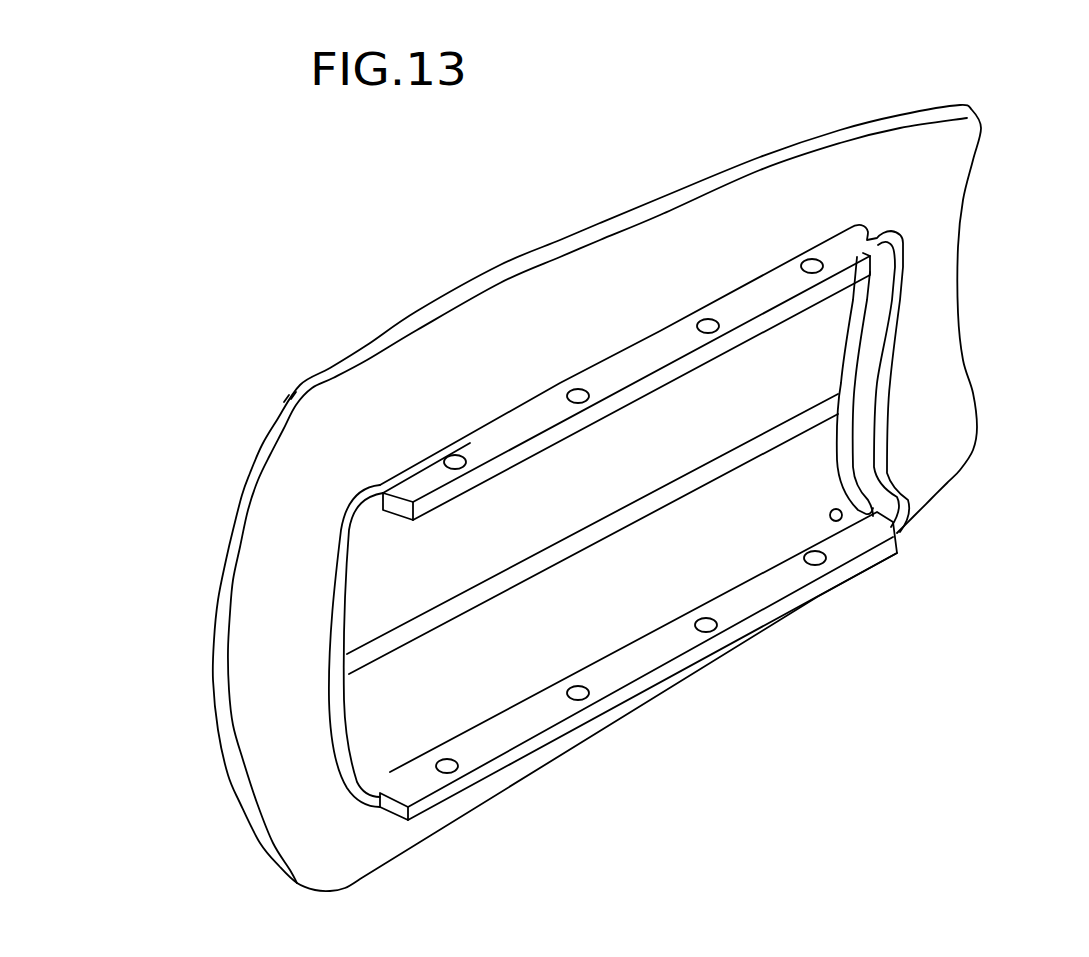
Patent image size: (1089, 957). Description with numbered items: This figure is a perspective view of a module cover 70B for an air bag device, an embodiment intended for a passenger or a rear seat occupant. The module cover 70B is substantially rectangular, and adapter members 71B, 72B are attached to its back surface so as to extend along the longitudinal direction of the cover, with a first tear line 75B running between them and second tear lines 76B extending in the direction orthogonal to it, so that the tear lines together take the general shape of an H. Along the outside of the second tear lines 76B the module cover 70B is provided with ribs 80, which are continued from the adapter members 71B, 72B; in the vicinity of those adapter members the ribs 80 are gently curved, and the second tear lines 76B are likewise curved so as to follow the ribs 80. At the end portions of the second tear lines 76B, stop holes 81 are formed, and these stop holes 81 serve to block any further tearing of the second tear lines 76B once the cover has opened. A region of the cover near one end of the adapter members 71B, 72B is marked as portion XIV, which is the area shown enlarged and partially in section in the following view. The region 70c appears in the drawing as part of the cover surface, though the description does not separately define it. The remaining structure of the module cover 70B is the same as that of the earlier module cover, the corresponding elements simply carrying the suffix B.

The module cover 70B is at (781, 132).
The panel flange 70c is at (497, 312).
The adapter member 71B is at (661, 345).
The adapter member 72B is at (665, 652).
The first tear line 75B is at (630, 517).
The second tear line 76B is at (855, 343).
The rib 80 is at (860, 410).
The stop hole 81 is at (830, 514).
The portion XIV is at (908, 488).